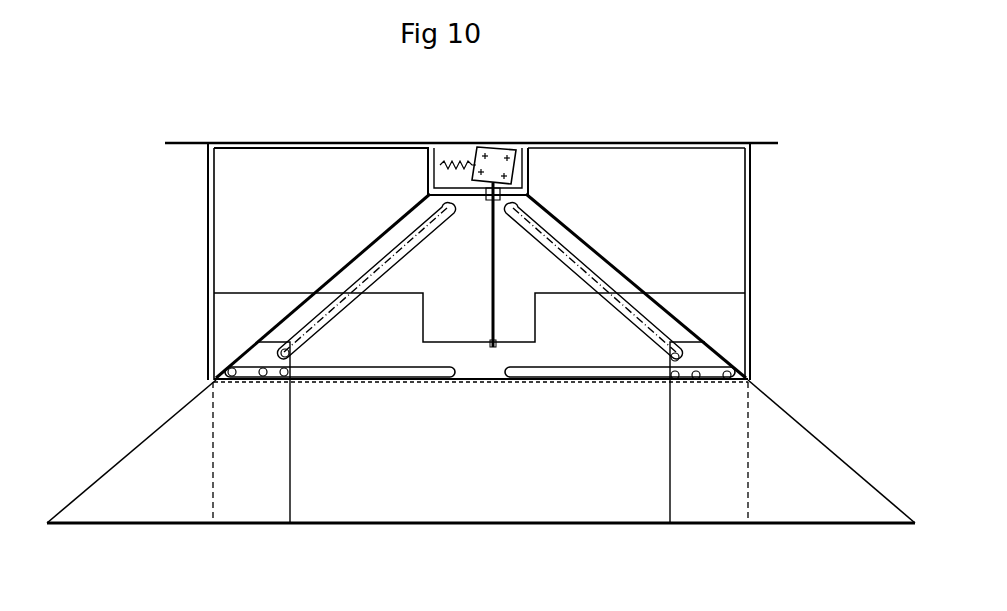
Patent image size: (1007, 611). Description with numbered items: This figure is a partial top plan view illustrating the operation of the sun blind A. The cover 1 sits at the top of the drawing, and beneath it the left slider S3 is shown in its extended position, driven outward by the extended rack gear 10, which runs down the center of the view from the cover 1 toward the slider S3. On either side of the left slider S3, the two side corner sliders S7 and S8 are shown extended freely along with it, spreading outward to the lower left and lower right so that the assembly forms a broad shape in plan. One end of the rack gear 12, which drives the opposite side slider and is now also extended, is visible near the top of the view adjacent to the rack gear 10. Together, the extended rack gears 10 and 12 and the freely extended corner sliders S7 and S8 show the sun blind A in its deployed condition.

The cover 1 is at (502, 144).
The rack gear 10 is at (491, 283).
The rack gear 12 is at (504, 199).
The sun blind A is at (208, 290).
The side corner slider S7 is at (165, 510).
The left slider S3 is at (428, 510).
The side corner slider S8 is at (797, 513).